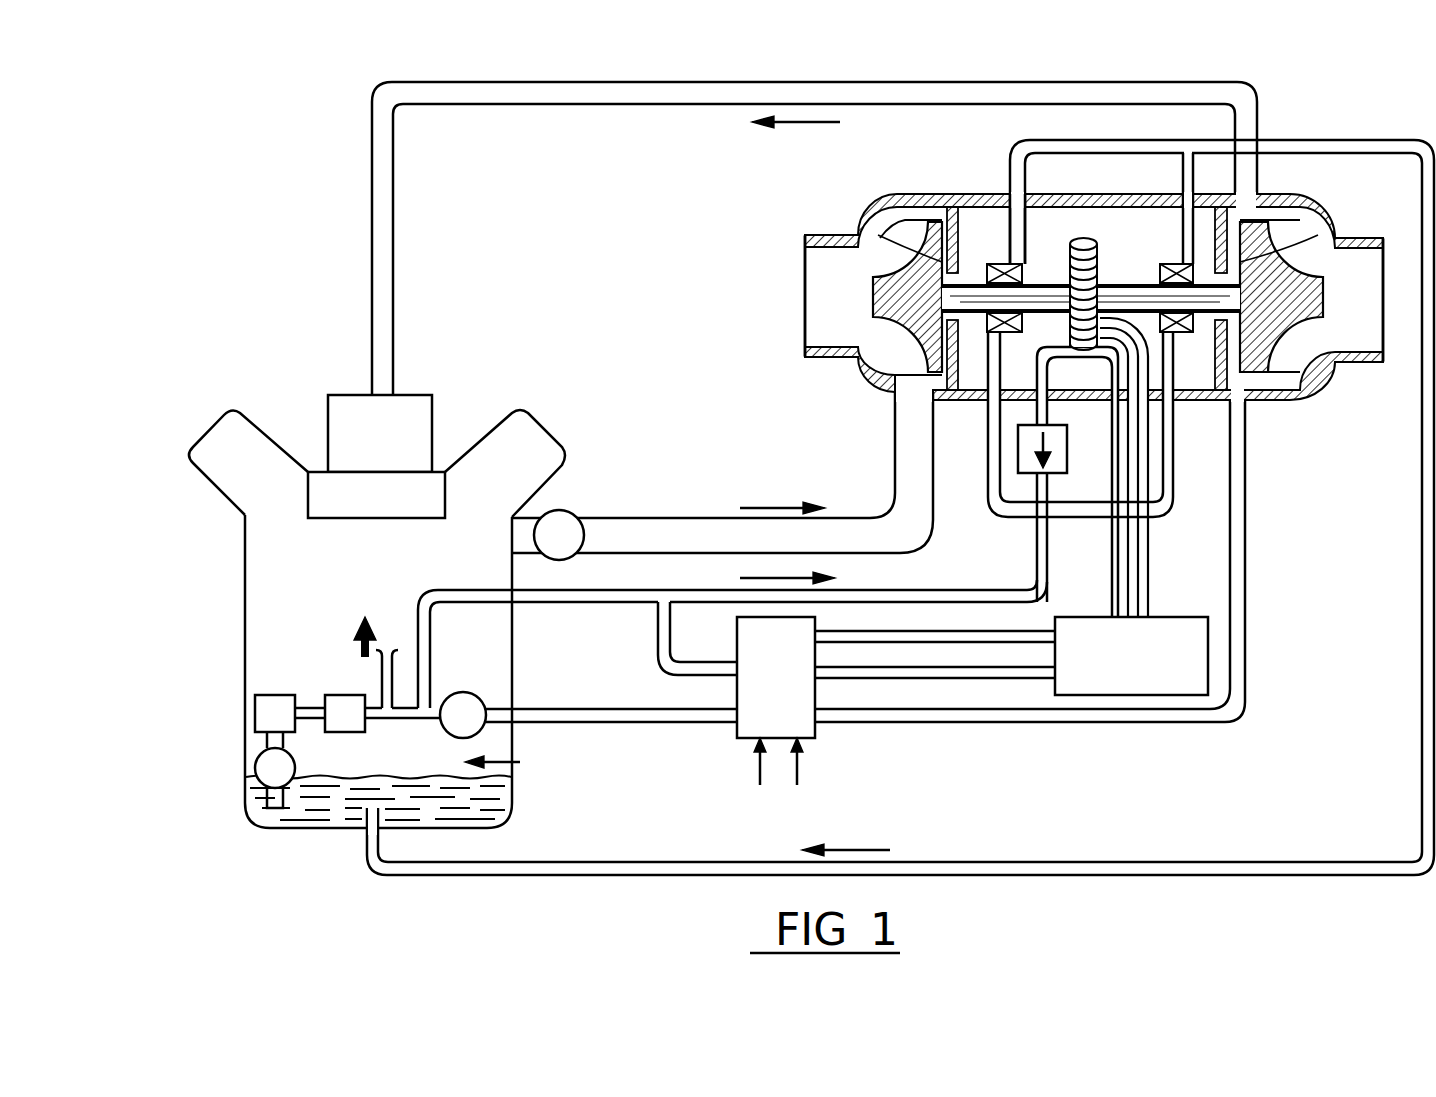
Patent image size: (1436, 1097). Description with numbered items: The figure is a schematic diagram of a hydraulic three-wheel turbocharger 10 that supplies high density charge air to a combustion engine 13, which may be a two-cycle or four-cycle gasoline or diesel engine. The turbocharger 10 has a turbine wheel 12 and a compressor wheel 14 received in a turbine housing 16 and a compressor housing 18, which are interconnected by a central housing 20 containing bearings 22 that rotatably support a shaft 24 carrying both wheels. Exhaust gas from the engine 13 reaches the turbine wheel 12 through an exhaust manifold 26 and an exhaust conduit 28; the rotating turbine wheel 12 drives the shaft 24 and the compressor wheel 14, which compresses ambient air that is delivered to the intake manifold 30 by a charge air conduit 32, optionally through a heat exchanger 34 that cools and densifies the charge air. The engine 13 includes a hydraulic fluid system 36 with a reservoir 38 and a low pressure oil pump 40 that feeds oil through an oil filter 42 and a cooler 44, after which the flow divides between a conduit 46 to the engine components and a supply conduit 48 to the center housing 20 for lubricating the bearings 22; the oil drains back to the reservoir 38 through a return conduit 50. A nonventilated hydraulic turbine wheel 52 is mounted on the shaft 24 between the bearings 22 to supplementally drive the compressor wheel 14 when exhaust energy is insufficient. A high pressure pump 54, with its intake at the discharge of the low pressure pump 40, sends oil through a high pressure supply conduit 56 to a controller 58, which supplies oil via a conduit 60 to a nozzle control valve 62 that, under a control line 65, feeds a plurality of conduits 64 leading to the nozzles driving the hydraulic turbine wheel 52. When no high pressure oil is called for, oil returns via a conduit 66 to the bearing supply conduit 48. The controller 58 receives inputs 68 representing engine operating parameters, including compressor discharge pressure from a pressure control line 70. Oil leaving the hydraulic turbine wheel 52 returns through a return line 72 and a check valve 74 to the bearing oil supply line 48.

The three-wheel turbocharger 10 is at (768, 261).
The turbine wheel 12 is at (920, 265).
The combustion engine 13 is at (262, 582).
The compressor wheel 14 is at (1283, 265).
The turbine housing 16 is at (838, 232).
The compressor housing 18 is at (1345, 243).
The central housing 20 is at (1050, 194).
The bearings 22 is at (1002, 263).
The shaft 24 is at (1050, 285).
The exhaust manifold 26 is at (560, 528).
The exhaust conduit 28 is at (692, 534).
The intake manifold 30 is at (358, 500).
The charge air conduit 32 is at (880, 85).
The heat exchanger 34 is at (405, 410).
The hydraulic fluid system 36 is at (520, 762).
The reservoir 38 is at (365, 812).
The low pressure oil pump 40 is at (255, 765).
The oil filter 42 is at (258, 712).
The cooler 44 is at (355, 732).
The conduit 46 is at (380, 690).
The supply conduit 48 is at (430, 586).
The return conduit 50 is at (595, 862).
The nonventilated hydraulic turbine wheel 52 is at (1082, 240).
The high pressure pump 54 is at (455, 698).
The high pressure supply conduit 56 is at (612, 723).
The controller 58 is at (800, 738).
The conduit 60 is at (912, 676).
The nozzle control valve 62 is at (1165, 617).
The conduits 64 is at (1148, 566).
The control line 65 is at (892, 634).
The conduit 66 is at (672, 650).
The inputs 68 is at (797, 772).
The pressure control line 70 is at (1090, 722).
The return line 72 is at (1038, 413).
The check valve 74 is at (1030, 450).